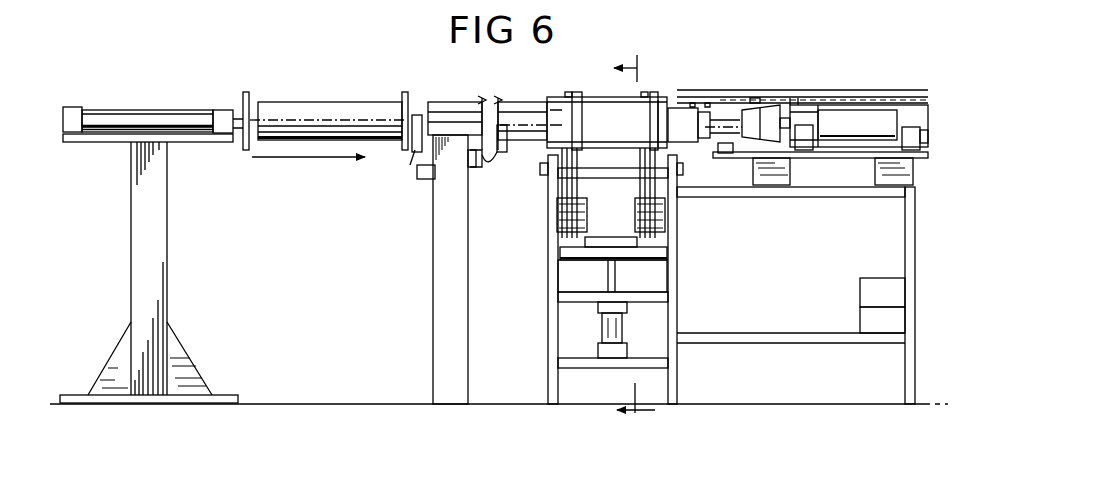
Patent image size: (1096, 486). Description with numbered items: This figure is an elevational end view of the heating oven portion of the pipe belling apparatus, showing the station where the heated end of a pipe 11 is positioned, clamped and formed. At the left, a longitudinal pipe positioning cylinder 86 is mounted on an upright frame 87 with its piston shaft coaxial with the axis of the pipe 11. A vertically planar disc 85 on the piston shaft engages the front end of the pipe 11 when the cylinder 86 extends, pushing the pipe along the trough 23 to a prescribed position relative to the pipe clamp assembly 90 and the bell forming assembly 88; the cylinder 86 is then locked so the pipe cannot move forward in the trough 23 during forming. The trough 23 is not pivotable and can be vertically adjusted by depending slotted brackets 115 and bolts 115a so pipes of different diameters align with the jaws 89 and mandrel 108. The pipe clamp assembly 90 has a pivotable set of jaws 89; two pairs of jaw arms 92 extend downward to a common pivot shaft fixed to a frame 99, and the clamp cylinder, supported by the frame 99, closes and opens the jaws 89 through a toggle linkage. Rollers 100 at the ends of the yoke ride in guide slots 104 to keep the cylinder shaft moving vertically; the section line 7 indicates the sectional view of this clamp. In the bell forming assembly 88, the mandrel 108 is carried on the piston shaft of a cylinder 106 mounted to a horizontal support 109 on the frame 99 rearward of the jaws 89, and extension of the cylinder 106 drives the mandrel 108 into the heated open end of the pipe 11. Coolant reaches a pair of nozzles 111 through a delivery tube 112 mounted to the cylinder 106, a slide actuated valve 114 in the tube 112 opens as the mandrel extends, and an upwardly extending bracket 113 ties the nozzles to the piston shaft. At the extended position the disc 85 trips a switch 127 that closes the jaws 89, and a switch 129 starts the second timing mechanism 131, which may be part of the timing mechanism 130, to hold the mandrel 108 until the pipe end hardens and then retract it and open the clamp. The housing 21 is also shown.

The section line 7- 7 is at (634, 227).
The pipe 11 is at (372, 110).
The housing 21 is at (607, 120).
The trough 23 is at (480, 160).
The vertically planar disc 85 is at (249, 95).
The longitudinal pipe positioning cylinder 86 is at (175, 118).
The upright frame 87 is at (167, 207).
The bell forming assembly 88 is at (859, 104).
The jaws 89 is at (607, 102).
The pipe clamp assembly 90 is at (662, 84).
The jaw arms 92 is at (640, 160).
The frame 99 is at (677, 213).
The rollers 100 is at (555, 255).
The guide slots 104 is at (552, 273).
The cylinder 106 is at (857, 125).
The mandrel 108 is at (768, 110).
The horizontal support 109 is at (853, 158).
The nozzles 111 is at (752, 100).
The delivery tube 112 is at (860, 90).
The upwardly extending bracket 113 is at (793, 102).
The slide actuated valve 114 is at (798, 102).
The depending slotted brackets 115 is at (478, 178).
The bolts 115a is at (468, 173).
The switch 127 is at (418, 175).
The switch 129 is at (726, 153).
The timing mechanism 130 is at (882, 285).
The second timing mechanism 131 is at (867, 315).